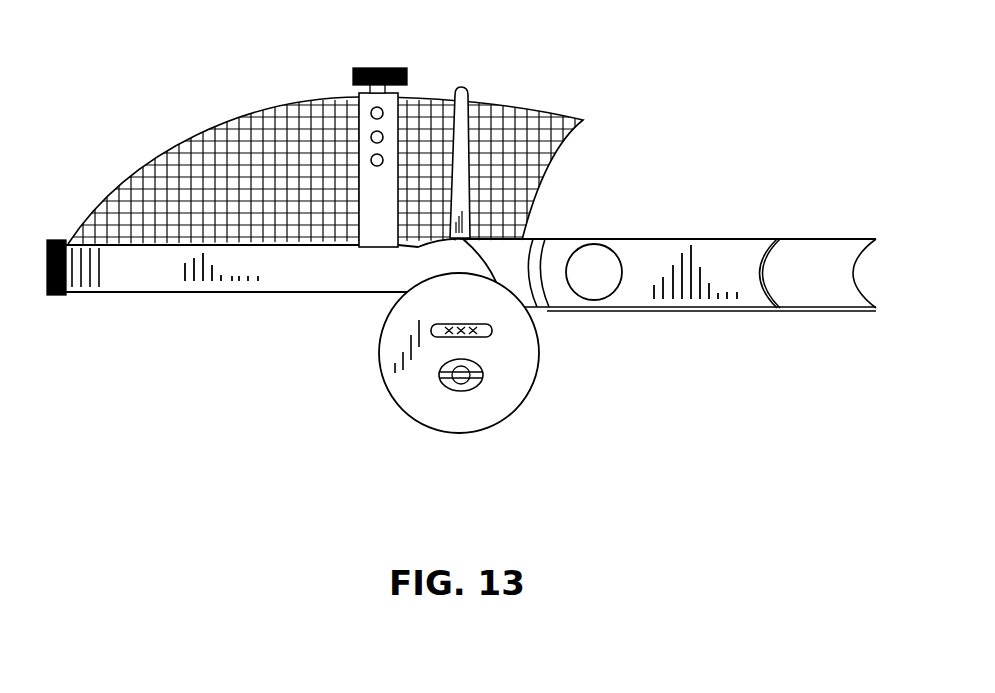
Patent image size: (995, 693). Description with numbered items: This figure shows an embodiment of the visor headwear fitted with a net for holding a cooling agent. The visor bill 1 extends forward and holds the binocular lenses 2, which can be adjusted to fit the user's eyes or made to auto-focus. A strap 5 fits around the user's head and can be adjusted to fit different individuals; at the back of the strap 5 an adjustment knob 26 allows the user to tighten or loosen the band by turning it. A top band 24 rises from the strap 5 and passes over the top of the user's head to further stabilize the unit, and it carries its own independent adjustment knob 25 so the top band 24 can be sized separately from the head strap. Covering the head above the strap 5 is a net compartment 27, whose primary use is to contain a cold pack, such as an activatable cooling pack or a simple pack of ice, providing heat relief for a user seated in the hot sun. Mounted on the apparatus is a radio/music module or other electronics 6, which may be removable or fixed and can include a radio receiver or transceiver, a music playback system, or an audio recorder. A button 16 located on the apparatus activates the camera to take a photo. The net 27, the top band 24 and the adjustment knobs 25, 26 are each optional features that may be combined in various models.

The visor bill 1 is at (698, 237).
The binocular lenses 2 is at (811, 272).
The strap 5 is at (118, 227).
The radio/music module or other electronics 6 is at (543, 372).
The button 16 is at (590, 253).
The top band 24 is at (372, 228).
The independent adjustment knob 25 is at (349, 79).
The adjustment knob 26 is at (60, 233).
The net compartment 27 is at (195, 120).